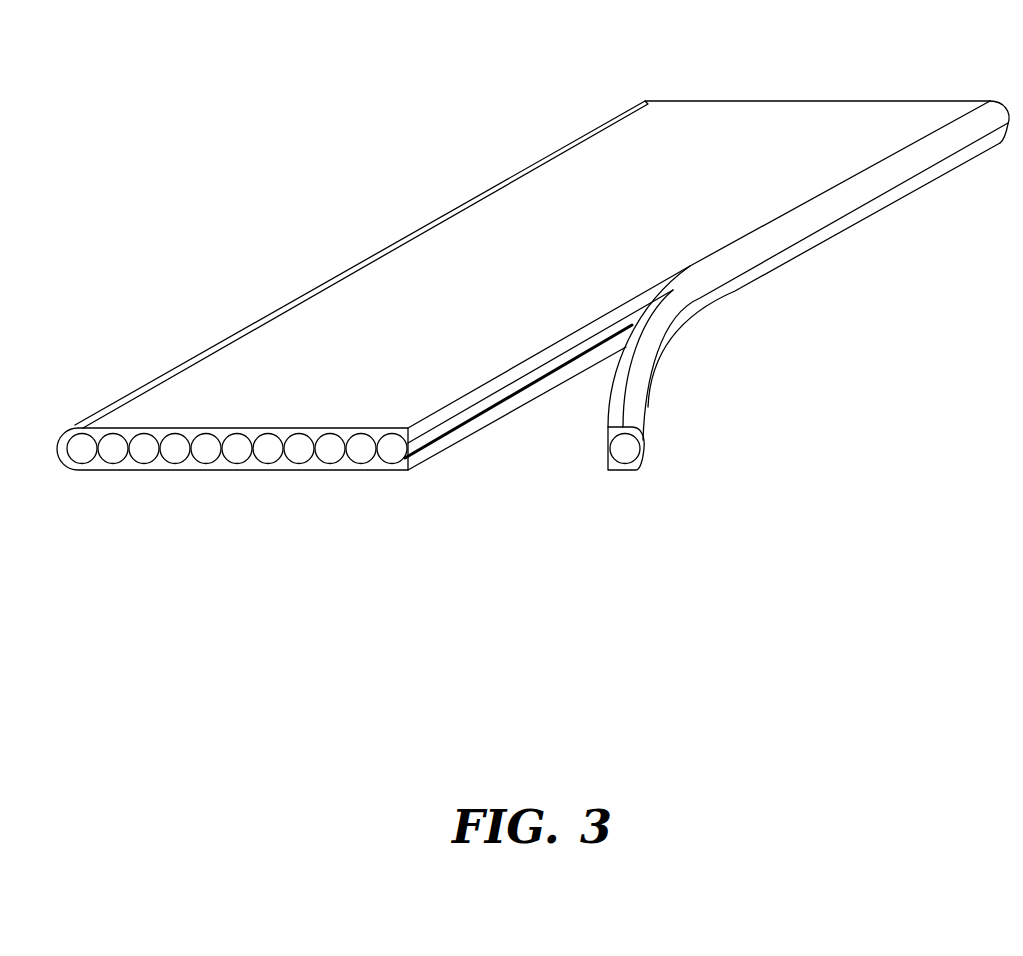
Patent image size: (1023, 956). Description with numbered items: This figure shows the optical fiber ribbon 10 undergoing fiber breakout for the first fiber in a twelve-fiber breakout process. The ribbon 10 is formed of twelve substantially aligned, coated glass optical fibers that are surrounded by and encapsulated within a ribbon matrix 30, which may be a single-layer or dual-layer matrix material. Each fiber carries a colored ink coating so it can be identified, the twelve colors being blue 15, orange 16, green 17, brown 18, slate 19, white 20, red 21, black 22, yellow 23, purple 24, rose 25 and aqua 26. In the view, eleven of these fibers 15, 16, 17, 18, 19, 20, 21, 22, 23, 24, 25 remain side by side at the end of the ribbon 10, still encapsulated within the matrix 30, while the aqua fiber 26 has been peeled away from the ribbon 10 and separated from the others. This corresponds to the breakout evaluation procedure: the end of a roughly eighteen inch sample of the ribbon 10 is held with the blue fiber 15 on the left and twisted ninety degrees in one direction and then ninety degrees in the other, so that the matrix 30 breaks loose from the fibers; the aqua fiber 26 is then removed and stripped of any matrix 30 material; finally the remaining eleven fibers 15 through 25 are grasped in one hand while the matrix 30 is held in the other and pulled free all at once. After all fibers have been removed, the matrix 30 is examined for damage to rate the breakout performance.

The optical fiber ribbon 10 is at (533, 288).
The ribbon matrix 30 is at (409, 224).
The blue optical fiber 15 is at (84, 462).
The orange optical fiber 16 is at (115, 462).
The green optical fiber 17 is at (146, 462).
The brown optical fiber 18 is at (177, 462).
The slate optical fiber 19 is at (208, 462).
The white optical fiber 20 is at (239, 462).
The red optical fiber 21 is at (270, 462).
The black optical fiber 22 is at (301, 462).
The yellow optical fiber 23 is at (332, 462).
The purple optical fiber 24 is at (363, 462).
The rose optical fiber 25 is at (394, 462).
The aqua optical fiber 26 is at (627, 462).